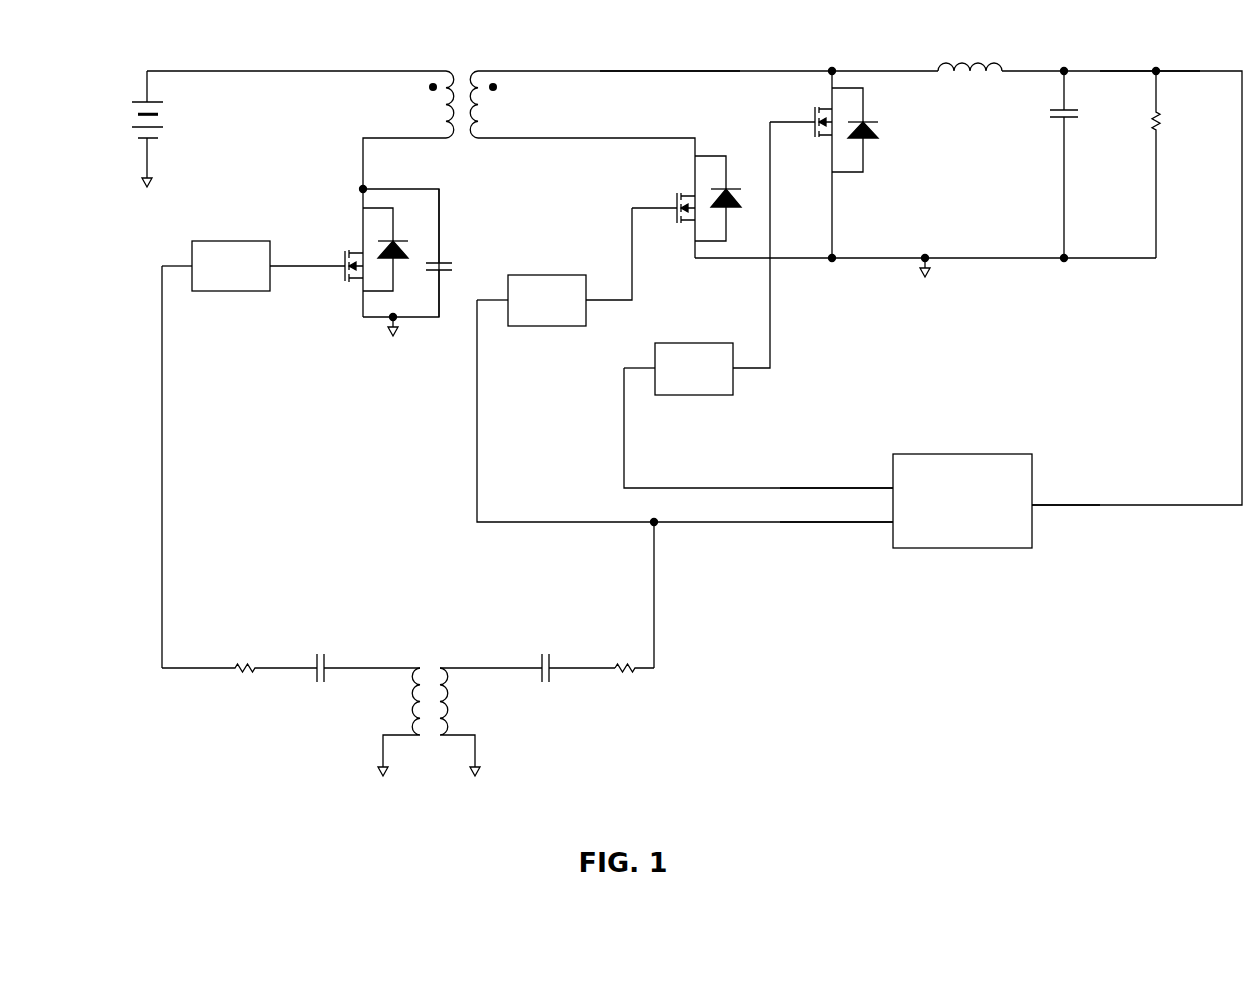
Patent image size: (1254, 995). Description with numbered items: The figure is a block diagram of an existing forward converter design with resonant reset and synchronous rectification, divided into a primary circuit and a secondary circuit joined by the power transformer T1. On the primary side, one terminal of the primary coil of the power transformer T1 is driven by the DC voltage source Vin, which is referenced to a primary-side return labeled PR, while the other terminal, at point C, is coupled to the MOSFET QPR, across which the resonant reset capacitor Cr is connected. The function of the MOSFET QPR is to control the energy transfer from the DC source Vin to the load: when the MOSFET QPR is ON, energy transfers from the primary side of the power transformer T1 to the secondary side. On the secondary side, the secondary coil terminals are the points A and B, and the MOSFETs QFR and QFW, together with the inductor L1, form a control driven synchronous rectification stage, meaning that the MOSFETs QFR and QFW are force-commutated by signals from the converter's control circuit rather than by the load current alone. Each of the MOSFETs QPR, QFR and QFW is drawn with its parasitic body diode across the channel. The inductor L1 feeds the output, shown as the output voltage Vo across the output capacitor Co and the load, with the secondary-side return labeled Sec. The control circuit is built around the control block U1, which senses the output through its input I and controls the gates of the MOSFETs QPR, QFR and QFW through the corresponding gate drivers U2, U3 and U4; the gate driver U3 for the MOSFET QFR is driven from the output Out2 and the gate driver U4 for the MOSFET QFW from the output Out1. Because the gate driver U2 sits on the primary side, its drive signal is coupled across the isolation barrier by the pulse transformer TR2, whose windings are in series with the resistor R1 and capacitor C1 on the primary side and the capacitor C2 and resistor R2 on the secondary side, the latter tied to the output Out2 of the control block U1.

The DC voltage source Vin is at (196, 111).
The primary ground PR is at (272, 491).
The power transformer T1 is at (487, 99).
The point A is at (670, 62).
The point B is at (586, 187).
The point C is at (404, 216).
The MOSFET QPR is at (354, 257).
The resonant reset capacitor Cr is at (453, 253).
The gate driver U2 is at (216, 255).
The MOSFET QFR is at (663, 228).
The gate driver U3 is at (531, 290).
The MOSFET QFW is at (805, 218).
The gate driver U4 is at (678, 358).
The inductor L1 is at (968, 49).
The output voltage Vo is at (1150, 54).
The output capacitor Co is at (1075, 165).
The secondary ground Sec is at (704, 530).
The Control Block U1 is at (962, 490).
The control output 1 Out1 is at (836, 473).
The control output 2 Out2 is at (836, 545).
The control input I is at (1066, 504).
The resistor R1 is at (239, 647).
The capacitor C1 is at (363, 652).
The pulse transformer TR2 is at (443, 688).
The capacitor C2 is at (527, 652).
The resistor R2 is at (625, 647).